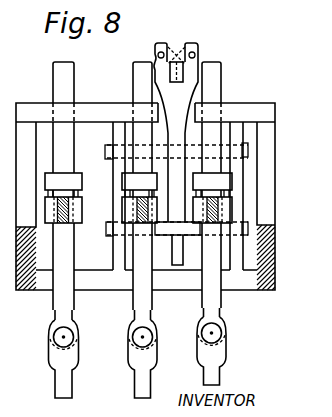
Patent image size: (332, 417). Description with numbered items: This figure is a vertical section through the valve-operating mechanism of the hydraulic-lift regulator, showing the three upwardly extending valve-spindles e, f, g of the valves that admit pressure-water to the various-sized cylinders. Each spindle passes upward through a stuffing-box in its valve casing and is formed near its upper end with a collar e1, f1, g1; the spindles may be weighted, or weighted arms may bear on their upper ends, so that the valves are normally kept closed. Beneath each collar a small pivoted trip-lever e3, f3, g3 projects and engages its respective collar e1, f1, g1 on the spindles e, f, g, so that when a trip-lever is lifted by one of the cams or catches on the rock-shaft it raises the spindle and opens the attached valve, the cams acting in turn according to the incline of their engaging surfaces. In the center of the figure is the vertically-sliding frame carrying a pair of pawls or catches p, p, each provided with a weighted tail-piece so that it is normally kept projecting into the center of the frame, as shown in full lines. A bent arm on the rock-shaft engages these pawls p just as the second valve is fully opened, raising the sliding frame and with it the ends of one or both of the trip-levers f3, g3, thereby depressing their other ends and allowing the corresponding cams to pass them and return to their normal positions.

The valve spindle e is at (64, 230).
The valve spindle f is at (142, 230).
The valve spindle g is at (211, 223).
The pawl p is at (196, 46).
The collar e1 is at (66, 180).
The pivoted trip-lever e3 is at (83, 208).
The collar f1 is at (126, 181).
The pivoted trip-lever f3 is at (130, 208).
The collar g1 is at (215, 182).
The pivoted trip-lever g3 is at (215, 206).